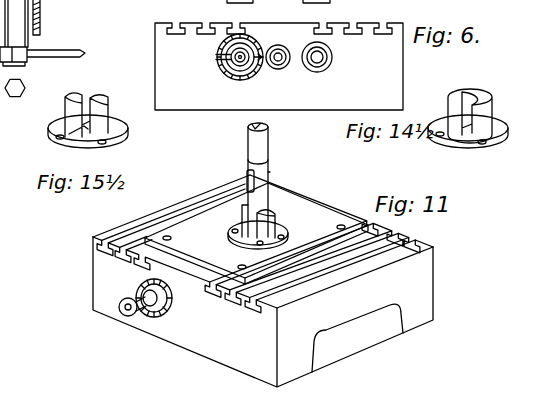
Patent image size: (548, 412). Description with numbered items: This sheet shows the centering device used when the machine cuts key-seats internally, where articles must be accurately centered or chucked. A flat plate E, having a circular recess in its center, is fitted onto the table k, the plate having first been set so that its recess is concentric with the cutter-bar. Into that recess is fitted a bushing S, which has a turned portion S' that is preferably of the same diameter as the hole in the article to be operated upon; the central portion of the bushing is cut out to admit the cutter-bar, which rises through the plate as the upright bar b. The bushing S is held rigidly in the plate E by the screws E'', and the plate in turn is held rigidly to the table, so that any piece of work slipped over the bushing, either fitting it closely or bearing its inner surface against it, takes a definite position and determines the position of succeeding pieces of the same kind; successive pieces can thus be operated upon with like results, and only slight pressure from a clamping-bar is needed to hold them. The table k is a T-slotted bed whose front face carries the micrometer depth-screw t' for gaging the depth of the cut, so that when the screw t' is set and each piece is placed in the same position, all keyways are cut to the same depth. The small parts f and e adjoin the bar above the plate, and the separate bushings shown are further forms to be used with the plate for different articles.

In FIG. 6, the table k is at (279, 66).
In FIG. 11, the table k is at (263, 281).
In FIG. 6, the micrometer depth-screw t' is at (266, 57).
In FIG. 11, the micrometer depth-screw t' is at (143, 298).
In FIG. 11, the flat plate E is at (256, 233).
In FIG. 11, the screws E'' is at (254, 246).
In FIG. 11, the bushing S is at (264, 231).
In FIG. 11, the turned portion of bushing S' is at (269, 219).
In FIG. 11, the vertical post b is at (258, 180).
In FIG. 11, the pin f is at (247, 172).
In FIG. 11, the collar on post e is at (268, 172).